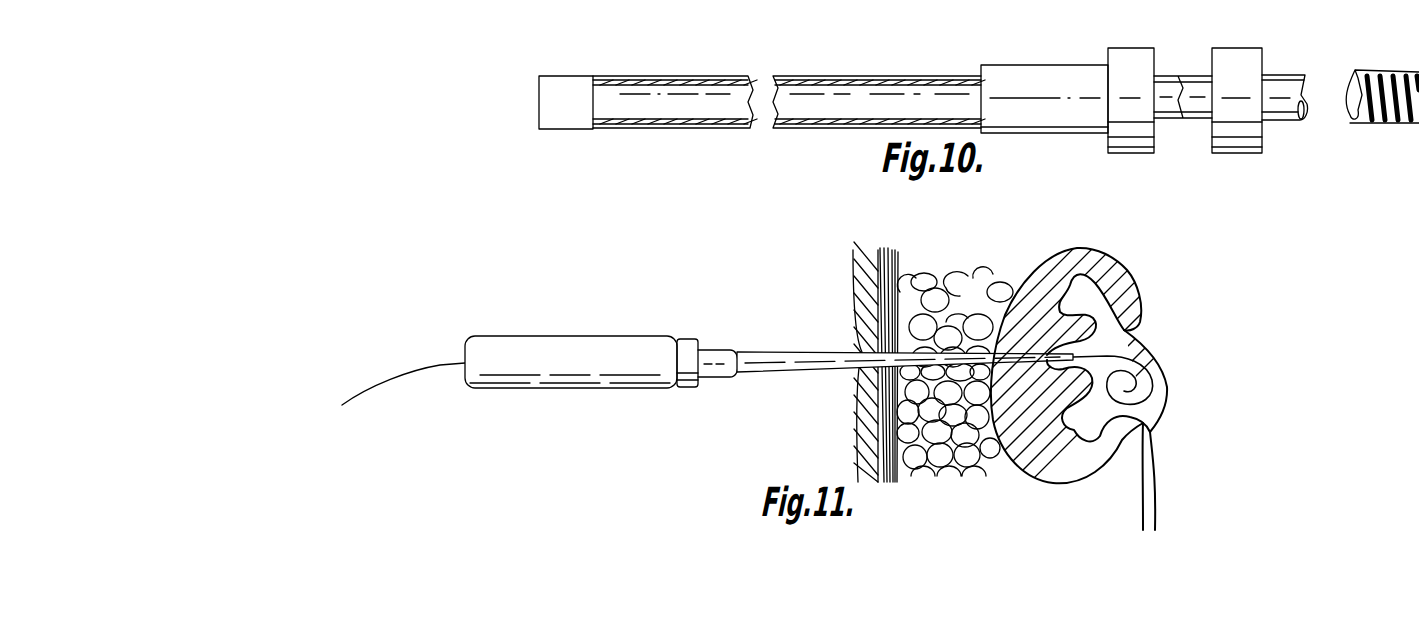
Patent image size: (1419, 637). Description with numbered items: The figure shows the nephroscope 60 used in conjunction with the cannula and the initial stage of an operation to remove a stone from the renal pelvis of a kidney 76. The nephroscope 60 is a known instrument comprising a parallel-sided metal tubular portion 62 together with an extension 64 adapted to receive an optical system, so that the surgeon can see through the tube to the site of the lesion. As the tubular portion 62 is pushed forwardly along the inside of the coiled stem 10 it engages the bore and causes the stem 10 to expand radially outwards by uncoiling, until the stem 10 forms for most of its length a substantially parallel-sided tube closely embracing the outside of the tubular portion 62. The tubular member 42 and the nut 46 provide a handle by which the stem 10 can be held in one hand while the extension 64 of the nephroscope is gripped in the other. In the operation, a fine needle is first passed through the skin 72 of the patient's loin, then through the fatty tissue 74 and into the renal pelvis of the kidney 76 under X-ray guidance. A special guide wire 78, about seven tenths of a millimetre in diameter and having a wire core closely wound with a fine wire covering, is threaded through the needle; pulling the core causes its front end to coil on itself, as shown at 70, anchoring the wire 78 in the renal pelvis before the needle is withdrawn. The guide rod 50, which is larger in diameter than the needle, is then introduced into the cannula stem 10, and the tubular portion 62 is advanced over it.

In FIG. 10, the stem 10 is at (568, 76).
In FIG. 11, the stem 10 is at (798, 360).
In FIG. 10, the tubular member 42 is at (1025, 78).
In FIG. 11, the tubular member 42 is at (720, 352).
In FIG. 10, the nut 46 is at (1130, 60).
In FIG. 11, the guide rod 50 is at (554, 330).
In FIG. 10, the nephroscope 60 is at (1236, 46).
In FIG. 10, the tubular portion 62 is at (872, 76).
In FIG. 10, the extension 64 is at (1287, 78).
In FIG. 11, the coiled front end of the guide wire 70 is at (1160, 433).
In FIG. 11, the skin 72 is at (870, 443).
In FIG. 11, the fatty tissue 74 is at (943, 468).
In FIG. 11, the kidney 76 is at (1075, 265).
In FIG. 11, the guide wire 78 is at (410, 372).